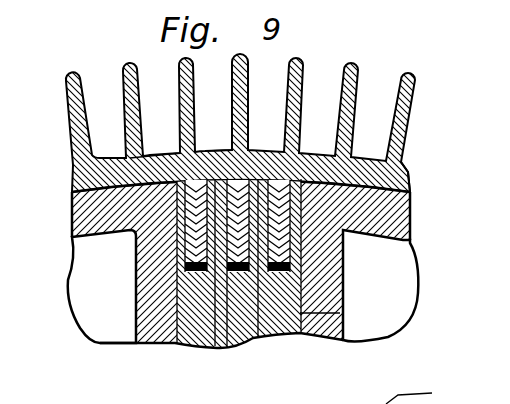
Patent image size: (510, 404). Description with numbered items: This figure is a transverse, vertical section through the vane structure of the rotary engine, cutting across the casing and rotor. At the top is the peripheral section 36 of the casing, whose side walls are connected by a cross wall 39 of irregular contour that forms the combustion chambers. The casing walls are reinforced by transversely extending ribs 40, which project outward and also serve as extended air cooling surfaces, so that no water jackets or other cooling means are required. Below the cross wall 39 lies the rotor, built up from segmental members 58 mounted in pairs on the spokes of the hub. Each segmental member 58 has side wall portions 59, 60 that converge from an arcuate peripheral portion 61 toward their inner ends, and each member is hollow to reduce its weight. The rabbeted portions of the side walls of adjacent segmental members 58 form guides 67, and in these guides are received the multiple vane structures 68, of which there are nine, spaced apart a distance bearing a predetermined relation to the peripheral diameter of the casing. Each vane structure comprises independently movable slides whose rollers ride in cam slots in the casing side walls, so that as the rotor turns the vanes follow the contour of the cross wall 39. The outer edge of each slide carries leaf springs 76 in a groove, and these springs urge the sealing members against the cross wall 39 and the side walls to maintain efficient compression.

The peripheral section 36 is at (410, 181).
The cross wall 39 is at (211, 162).
The transversely extending ribs 40 is at (231, 80).
The segmental members 58 is at (88, 221).
The side wall portion 59 is at (332, 288).
The side wall portion 60 is at (145, 298).
The arcuate peripheral portion 61 is at (85, 200).
The guides 67 is at (301, 313).
The multiple vane structures 68 is at (213, 347).
The leaf springs 76 is at (237, 272).